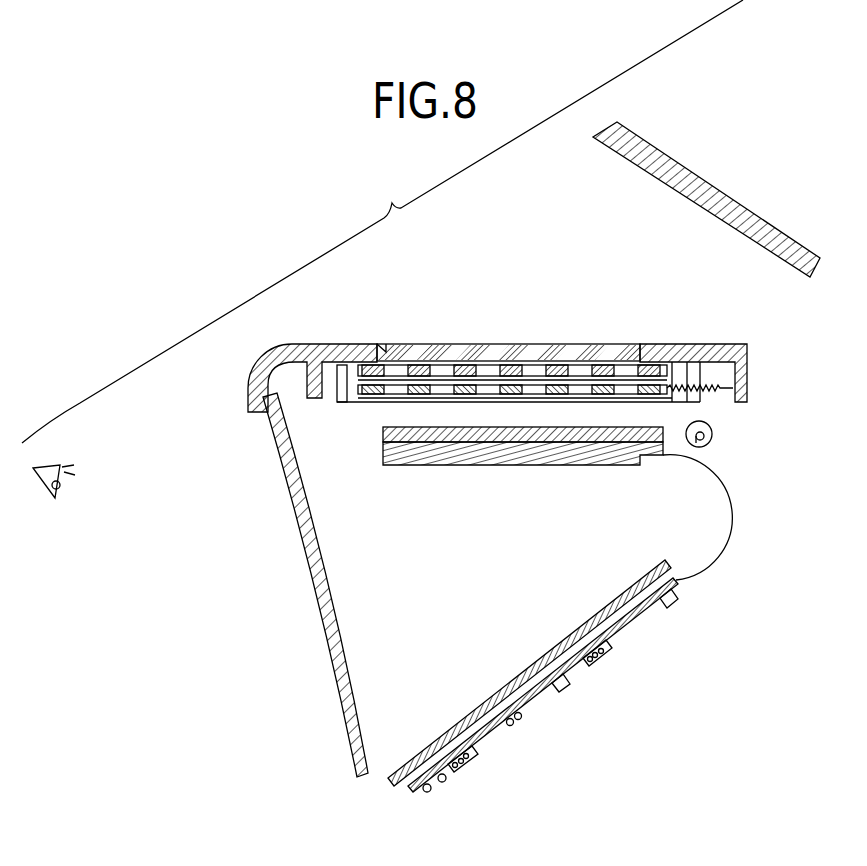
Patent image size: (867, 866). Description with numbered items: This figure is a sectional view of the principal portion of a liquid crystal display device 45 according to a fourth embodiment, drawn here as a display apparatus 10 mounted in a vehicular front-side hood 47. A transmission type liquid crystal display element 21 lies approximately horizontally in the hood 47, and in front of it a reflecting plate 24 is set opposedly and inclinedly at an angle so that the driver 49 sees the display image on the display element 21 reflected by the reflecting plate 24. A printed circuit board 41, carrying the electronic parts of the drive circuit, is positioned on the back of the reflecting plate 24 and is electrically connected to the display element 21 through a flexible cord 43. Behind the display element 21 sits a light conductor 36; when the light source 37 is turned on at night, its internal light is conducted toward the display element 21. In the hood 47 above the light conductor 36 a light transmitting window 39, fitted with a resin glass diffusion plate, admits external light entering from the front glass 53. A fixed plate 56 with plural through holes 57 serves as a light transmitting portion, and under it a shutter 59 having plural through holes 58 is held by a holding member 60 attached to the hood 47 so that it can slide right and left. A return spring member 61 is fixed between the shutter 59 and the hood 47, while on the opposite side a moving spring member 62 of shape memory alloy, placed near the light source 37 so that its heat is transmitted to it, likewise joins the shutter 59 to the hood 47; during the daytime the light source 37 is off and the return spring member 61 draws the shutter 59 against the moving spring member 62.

The display panel 10 is at (507, 348).
The liquid crystal display element 21 is at (477, 453).
The reflecting plate 24 is at (573, 628).
The light conductor 36 is at (383, 430).
The light source 37 is at (712, 439).
The light transmitting window 39 is at (382, 348).
The printed circuit board 41 is at (622, 625).
The flexible cord 43 is at (717, 517).
The device 45 is at (330, 758).
The vehicular front-side hood 47 is at (318, 345).
The driver 49 is at (43, 493).
The front glass 53 is at (727, 205).
The fixed plate 56 is at (423, 368).
The through holes 57 is at (393, 368).
The through holes 58 is at (580, 390).
The shutter 59 is at (606, 387).
The holding member 60 is at (668, 395).
The spring member for return 61 is at (336, 382).
The spring member for movement 62 is at (716, 392).